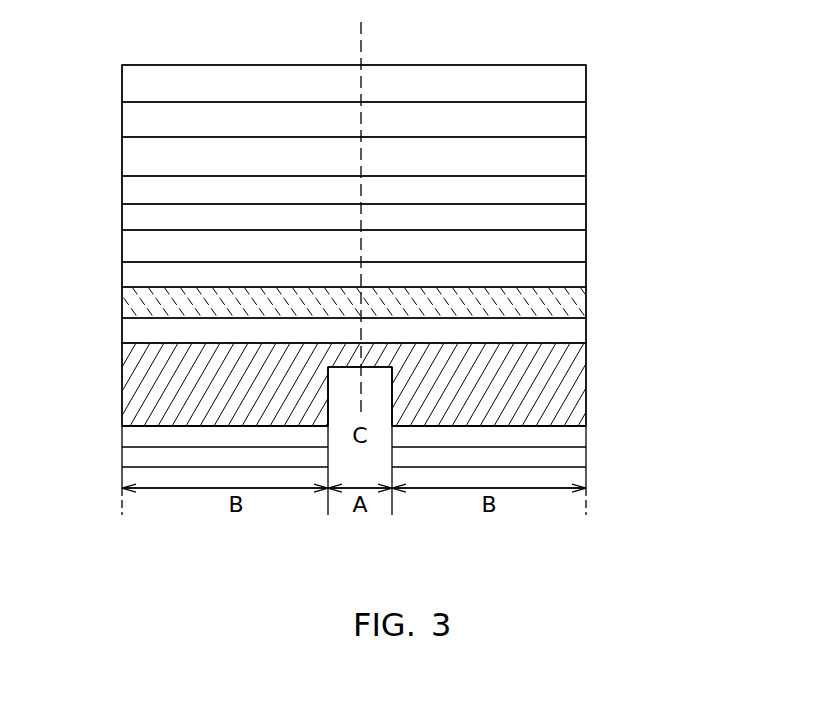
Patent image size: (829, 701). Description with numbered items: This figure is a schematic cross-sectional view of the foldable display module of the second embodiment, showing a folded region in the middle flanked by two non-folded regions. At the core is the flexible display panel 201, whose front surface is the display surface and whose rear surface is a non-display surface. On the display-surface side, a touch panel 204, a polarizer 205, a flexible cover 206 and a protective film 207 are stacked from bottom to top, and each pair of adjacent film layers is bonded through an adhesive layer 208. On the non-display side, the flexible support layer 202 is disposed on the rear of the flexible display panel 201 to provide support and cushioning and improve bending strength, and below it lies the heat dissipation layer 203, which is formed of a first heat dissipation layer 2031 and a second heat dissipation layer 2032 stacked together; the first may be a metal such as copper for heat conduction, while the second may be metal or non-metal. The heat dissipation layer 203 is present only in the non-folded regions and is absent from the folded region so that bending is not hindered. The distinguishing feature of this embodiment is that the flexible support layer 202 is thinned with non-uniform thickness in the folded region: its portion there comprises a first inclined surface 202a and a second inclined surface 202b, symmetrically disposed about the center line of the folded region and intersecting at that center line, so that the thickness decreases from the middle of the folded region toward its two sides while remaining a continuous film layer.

The protective film 207 is at (575, 93).
The adhesive layer 208 is at (575, 128).
The flexible cover 206 is at (575, 159).
The polarizer 205 is at (575, 213).
The touch panel 204 is at (575, 270).
The flexible display panel 201 is at (575, 298).
The flexible support layer 202 is at (575, 365).
The first inclined surface 202a is at (336, 369).
The second inclined surface 202b is at (384, 369).
The first heat dissipation layer 2031 is at (575, 437).
The second heat dissipation layer 2032 is at (575, 465).
The heat dissipation layer 203 is at (706, 415).